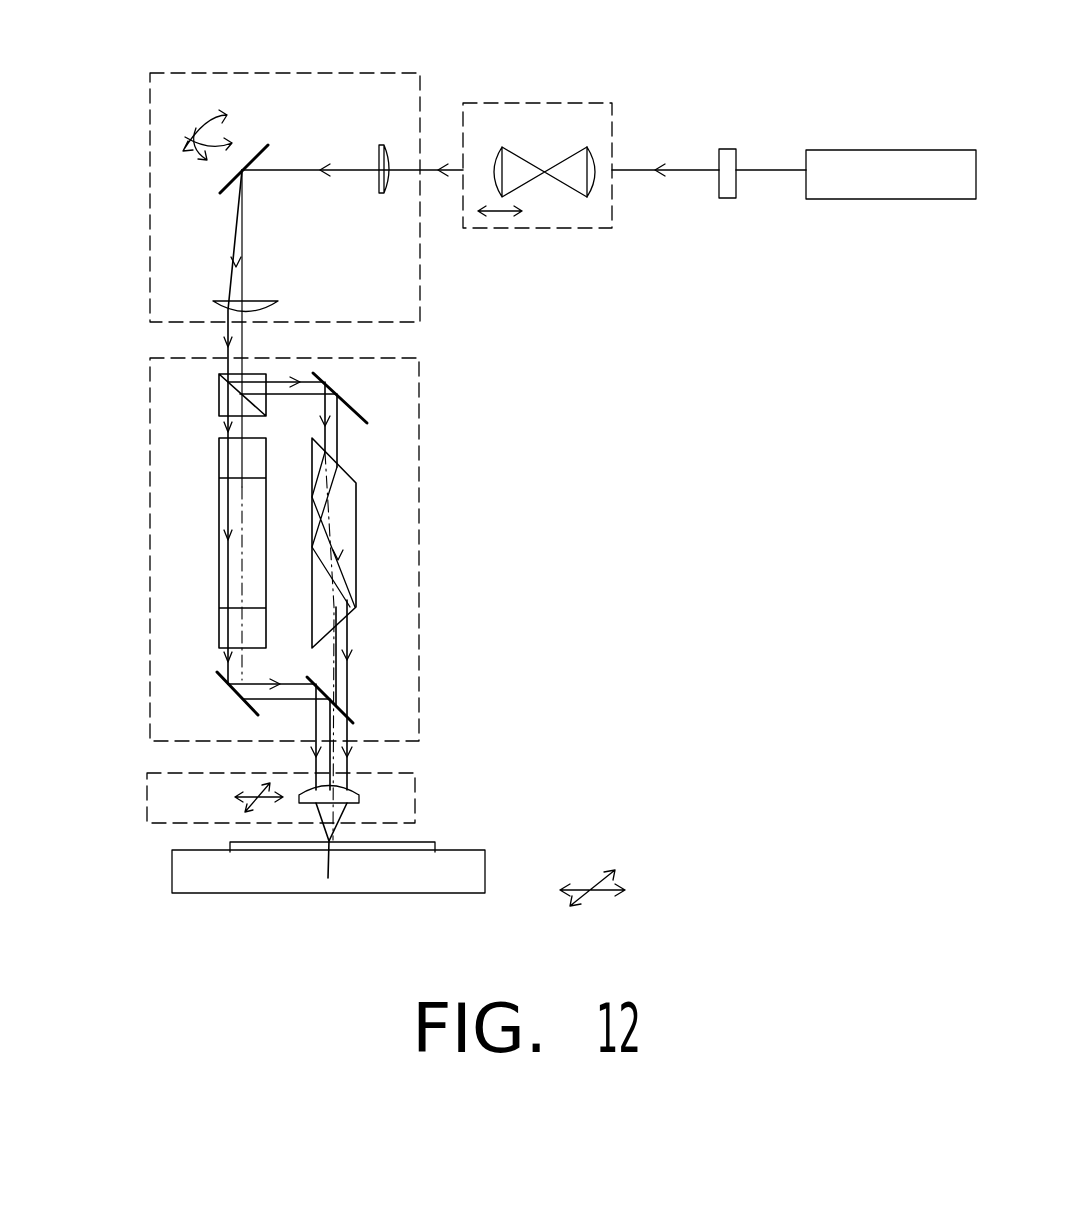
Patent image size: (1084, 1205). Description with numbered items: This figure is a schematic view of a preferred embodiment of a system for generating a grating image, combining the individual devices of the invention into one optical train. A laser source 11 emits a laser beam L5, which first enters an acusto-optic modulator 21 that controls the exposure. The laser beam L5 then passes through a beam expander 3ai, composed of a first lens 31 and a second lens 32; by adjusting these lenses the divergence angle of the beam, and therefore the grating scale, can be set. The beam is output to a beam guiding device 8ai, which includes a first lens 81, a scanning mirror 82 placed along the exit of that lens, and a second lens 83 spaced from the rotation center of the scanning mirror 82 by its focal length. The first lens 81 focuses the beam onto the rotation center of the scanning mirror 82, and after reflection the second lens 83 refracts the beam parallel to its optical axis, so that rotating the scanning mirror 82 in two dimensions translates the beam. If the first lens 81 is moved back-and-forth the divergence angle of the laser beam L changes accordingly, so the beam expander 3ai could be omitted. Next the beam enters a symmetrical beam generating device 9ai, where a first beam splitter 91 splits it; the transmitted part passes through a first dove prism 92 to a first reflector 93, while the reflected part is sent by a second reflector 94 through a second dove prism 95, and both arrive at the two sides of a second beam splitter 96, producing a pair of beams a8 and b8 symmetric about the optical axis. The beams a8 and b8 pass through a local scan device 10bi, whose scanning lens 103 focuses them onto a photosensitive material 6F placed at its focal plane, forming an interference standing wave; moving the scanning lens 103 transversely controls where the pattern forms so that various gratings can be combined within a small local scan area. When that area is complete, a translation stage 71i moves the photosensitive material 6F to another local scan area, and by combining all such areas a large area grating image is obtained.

The laser source 11 is at (875, 200).
The acusto-optic modulator 21 is at (728, 152).
The beam expander 3ai is at (545, 103).
The first lens 31 is at (497, 150).
The second lens 32 is at (592, 196).
The laser beam L5 is at (691, 153).
The beam guiding device 8ai is at (152, 205).
The first lens 81 is at (379, 192).
The scanning mirror 82 is at (264, 146).
The second lens 83 is at (277, 306).
The laser beam L is at (205, 339).
The symmetrical beam generating device 9ai is at (408, 470).
The first beam splitter 91 is at (222, 384).
The first dove prism 92 is at (218, 556).
The first reflector 93 is at (234, 700).
The second reflector 94 is at (352, 410).
The second dove prism 95 is at (357, 566).
The second beam splitter 96 is at (347, 714).
The beam a8 is at (284, 763).
The beam b8 is at (373, 763).
The local scan device 10bi is at (150, 825).
The scanning lens 103 is at (360, 800).
The photosensitive material 6F is at (436, 845).
The translation stage 71i is at (470, 893).